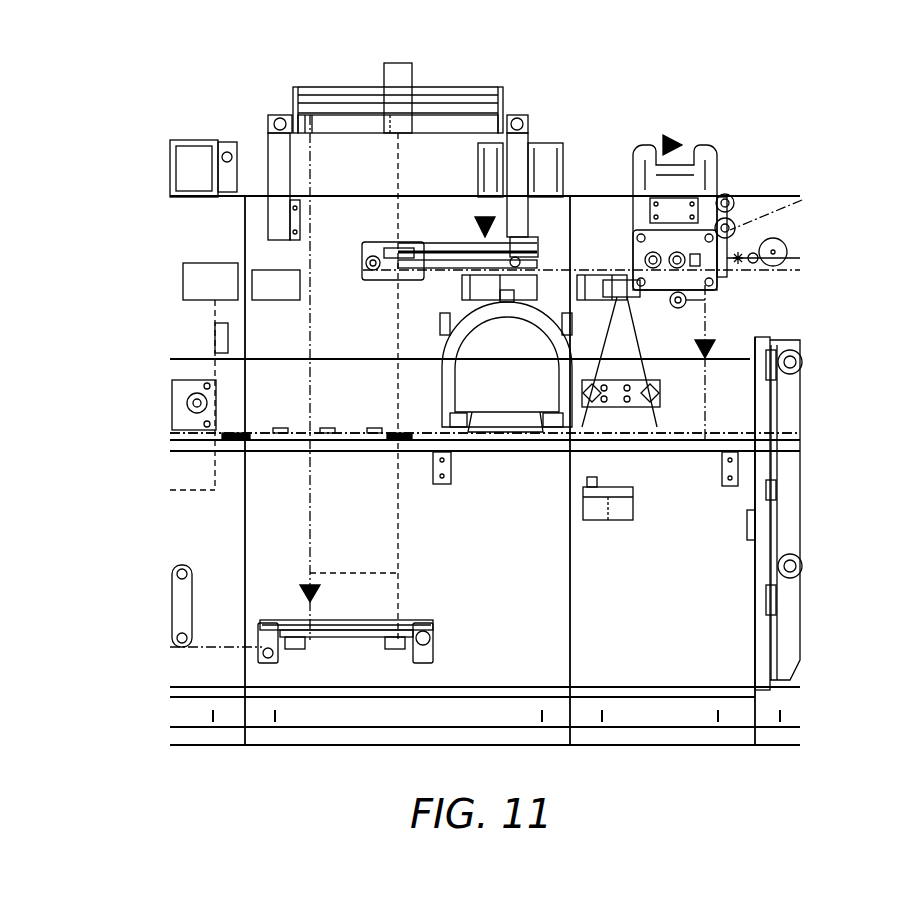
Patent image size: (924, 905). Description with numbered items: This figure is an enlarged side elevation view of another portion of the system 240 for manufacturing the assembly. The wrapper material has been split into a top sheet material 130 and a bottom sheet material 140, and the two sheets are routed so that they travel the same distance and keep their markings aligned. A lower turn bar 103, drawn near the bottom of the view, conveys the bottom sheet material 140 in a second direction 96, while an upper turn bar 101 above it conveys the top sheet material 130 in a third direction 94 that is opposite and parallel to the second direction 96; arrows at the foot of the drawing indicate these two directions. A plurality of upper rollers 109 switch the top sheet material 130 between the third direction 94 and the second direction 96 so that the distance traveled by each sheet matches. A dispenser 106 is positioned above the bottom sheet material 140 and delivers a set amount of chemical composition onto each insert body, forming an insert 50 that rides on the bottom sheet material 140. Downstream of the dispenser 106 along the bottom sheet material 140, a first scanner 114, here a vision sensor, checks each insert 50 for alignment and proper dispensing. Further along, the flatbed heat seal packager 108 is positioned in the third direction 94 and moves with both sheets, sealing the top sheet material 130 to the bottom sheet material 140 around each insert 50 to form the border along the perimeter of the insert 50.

The top sheet material 130 is at (462, 150).
The system 240 is at (699, 110).
The upper rollers 109 is at (733, 223).
The upper turn bar 101 is at (537, 250).
The dispenser 106 is at (208, 348).
The insert 50 is at (283, 428).
The bottom sheet material 140 is at (307, 440).
The first scanner 114 is at (502, 400).
The flatbed heat seal packager 108 is at (800, 387).
The lower turn bar 103 is at (437, 637).
The second direction 96 is at (170, 805).
The third direction 94 is at (800, 805).